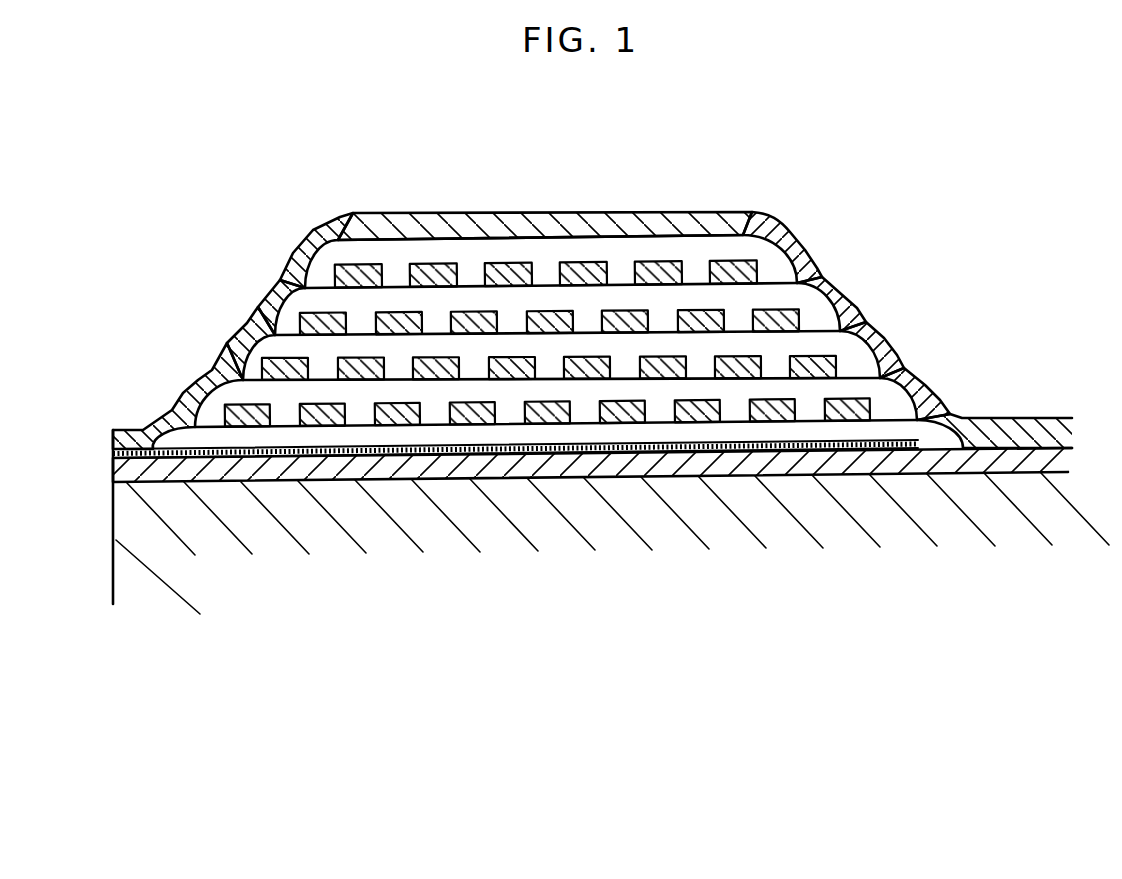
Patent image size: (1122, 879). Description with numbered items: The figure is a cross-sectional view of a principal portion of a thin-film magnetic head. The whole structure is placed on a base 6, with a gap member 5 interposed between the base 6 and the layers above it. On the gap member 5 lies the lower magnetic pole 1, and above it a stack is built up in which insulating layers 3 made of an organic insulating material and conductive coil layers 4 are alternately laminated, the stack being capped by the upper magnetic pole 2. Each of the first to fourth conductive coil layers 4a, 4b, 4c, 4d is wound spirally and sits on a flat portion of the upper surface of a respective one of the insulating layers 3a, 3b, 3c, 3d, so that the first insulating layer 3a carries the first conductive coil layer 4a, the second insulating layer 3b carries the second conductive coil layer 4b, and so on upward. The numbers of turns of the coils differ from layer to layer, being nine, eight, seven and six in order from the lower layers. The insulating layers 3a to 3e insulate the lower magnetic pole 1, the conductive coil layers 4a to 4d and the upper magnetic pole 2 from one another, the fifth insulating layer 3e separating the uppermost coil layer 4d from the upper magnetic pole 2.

The lower magnetic pole 1 is at (118, 476).
The upper magnetic pole 2 is at (428, 225).
The insulating layers 3 is at (1044, 390).
The first insulating layer 3a is at (940, 438).
The second insulating layer 3b is at (890, 405).
The third insulating layer 3c is at (850, 358).
The fourth insulating layer 3d is at (815, 310).
The fifth insulating layer 3e is at (775, 268).
The conductive coil layers 4 is at (278, 182).
The first conductive coil layer 4a is at (196, 386).
The second conductive coil layer 4b is at (256, 322).
The third conductive coil layer 4c is at (292, 283).
The fourth conductive coil layer 4d is at (333, 268).
The gap member 5 is at (112, 455).
The base 6 is at (250, 552).